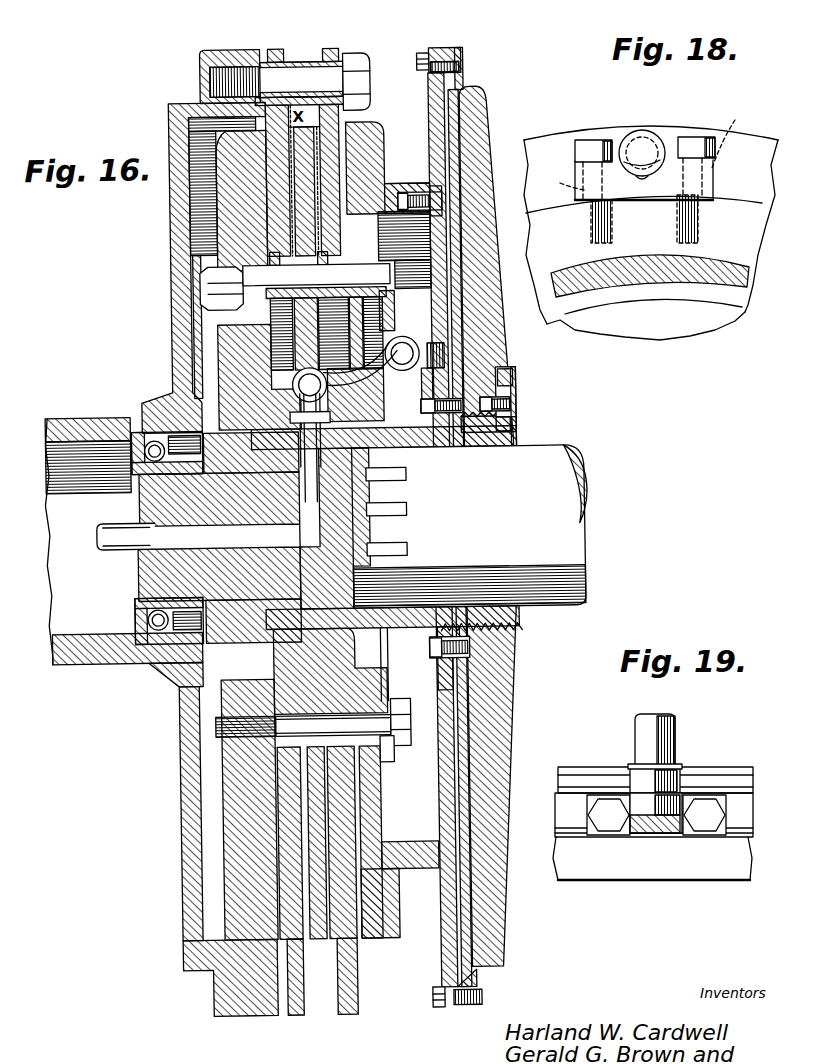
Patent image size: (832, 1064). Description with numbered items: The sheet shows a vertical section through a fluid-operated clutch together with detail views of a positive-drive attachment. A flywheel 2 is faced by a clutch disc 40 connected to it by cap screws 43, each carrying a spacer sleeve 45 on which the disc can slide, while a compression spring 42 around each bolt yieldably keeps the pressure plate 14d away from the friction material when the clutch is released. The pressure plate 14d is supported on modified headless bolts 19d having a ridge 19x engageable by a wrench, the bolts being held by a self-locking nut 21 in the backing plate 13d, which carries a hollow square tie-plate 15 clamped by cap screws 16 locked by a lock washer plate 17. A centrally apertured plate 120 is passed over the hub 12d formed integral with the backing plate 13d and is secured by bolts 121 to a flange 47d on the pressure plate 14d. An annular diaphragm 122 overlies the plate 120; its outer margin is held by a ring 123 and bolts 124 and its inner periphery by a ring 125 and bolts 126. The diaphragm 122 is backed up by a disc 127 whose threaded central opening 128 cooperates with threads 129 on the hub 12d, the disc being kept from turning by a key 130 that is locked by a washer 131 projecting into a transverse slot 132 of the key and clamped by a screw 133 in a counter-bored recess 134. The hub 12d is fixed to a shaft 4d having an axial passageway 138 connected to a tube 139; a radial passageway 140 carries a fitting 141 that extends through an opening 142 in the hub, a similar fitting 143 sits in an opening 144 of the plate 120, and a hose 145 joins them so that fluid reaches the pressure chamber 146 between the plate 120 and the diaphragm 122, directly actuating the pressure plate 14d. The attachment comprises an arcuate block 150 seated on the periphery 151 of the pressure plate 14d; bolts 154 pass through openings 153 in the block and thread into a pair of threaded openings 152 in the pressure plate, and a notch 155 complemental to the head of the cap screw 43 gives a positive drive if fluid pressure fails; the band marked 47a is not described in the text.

In FIG. 16, the flywheel 2 is at (175, 101).
In FIG. 16, the clutch disc 40 is at (284, 47).
In FIG. 19, the clutch disc 40 is at (732, 768).
In FIG. 16, the spacer sleeve 45 is at (305, 60).
In FIG. 19, the spacer sleeve 45 is at (630, 768).
In FIG. 16, the cap screw 43 is at (362, 52).
In FIG. 18, the cap screw 43 is at (640, 130).
In FIG. 19, the cap screw 43 is at (676, 727).
In FIG. 16, the annular diaphragm 122 is at (450, 47).
In FIG. 16, the bolt 124 is at (424, 60).
In FIG. 16, the ring 123 is at (470, 50).
In FIG. 16, the disc 127 is at (484, 91).
In FIG. 16, the pressure plate 14d is at (389, 134).
In FIG. 18, the pressure plate 14d is at (560, 247).
In FIG. 19, the pressure plate 14d is at (745, 866).
In FIG. 16, the flange 47d is at (398, 184).
In FIG. 16, the bolt 121 is at (425, 192).
In FIG. 16, the headless bolt 19d is at (212, 289).
In FIG. 16, the compression spring 42 is at (279, 296).
In FIG. 16, the self-locking nut 21 is at (384, 259).
In FIG. 16, the ridge 19x is at (396, 315).
In FIG. 16, the fitting 143 is at (420, 350).
In FIG. 16, the backing plate 13d is at (208, 365).
In FIG. 16, the opening 144 is at (428, 375).
In FIG. 16, the hose 145 is at (423, 406).
In FIG. 16, the fitting 141 is at (330, 416).
In FIG. 16, the opening 142 is at (330, 442).
In FIG. 16, the recess 134 is at (518, 372).
In FIG. 16, the washer 131 is at (519, 390).
In FIG. 16, the screw 133 is at (517, 404).
In FIG. 16, the key 130 is at (518, 423).
In FIG. 16, the hub 12d is at (518, 445).
In FIG. 16, the shaft 4d is at (588, 478).
In FIG. 16, the transverse slot 132 is at (510, 424).
In FIG. 16, the radial passageway 140 is at (318, 495).
In FIG. 16, the tube 139 is at (99, 520).
In FIG. 16, the axial passageway 138 is at (140, 556).
In FIG. 16, the threads 129 is at (488, 627).
In FIG. 16, the threaded central opening 128 is at (518, 633).
In FIG. 16, the ring 125 is at (468, 661).
In FIG. 16, the bolt 126 is at (428, 647).
In FIG. 16, the tie-plate 15 is at (392, 688).
In FIG. 16, the cap screw 16 is at (408, 708).
In FIG. 16, the lock washer plate 17 is at (395, 755).
In FIG. 16, the pressure chamber 146 is at (461, 760).
In FIG. 16, the centrally apertured plate 120 is at (438, 945).
In FIG. 18, the arcuate block 150 is at (716, 176).
In FIG. 18, the periphery 151 is at (748, 207).
In FIG. 19, the periphery 151 is at (752, 807).
In FIG. 18, the threaded opening 152 is at (593, 228).
In FIG. 18, the opening 153 is at (654, 148).
In FIG. 18, the bolt 154 is at (590, 140).
In FIG. 19, the bolt 154 is at (602, 835).
In FIG. 18, the notch 155 is at (641, 180).
In FIG. 19, the notch 155 is at (656, 835).
In FIG. 18, the band 47a is at (742, 290).